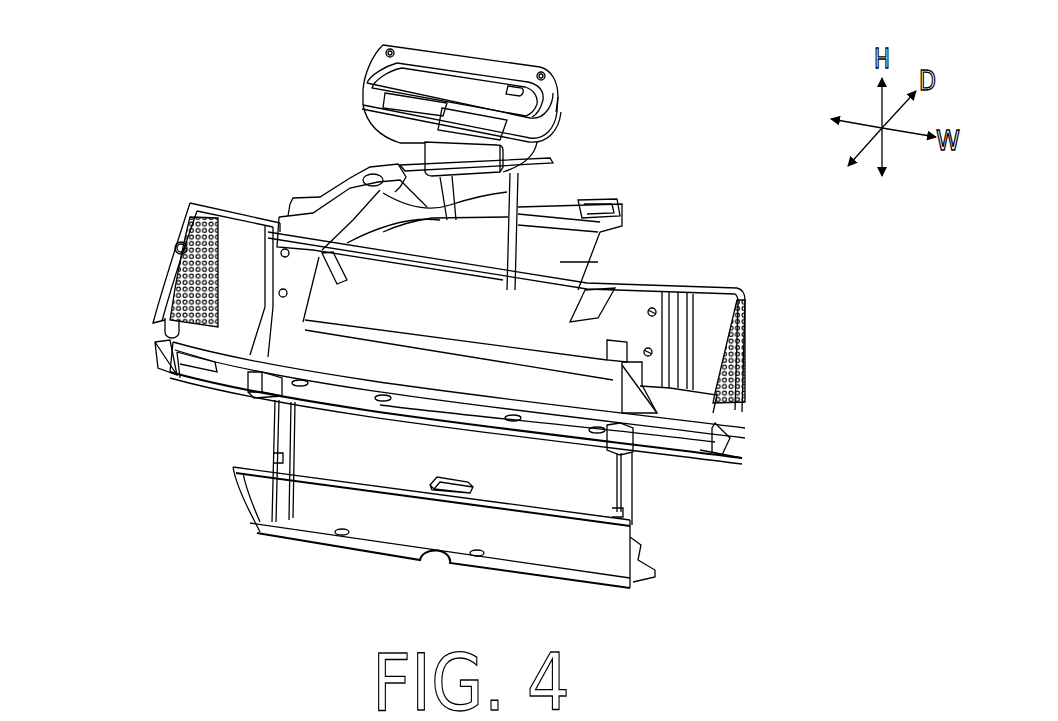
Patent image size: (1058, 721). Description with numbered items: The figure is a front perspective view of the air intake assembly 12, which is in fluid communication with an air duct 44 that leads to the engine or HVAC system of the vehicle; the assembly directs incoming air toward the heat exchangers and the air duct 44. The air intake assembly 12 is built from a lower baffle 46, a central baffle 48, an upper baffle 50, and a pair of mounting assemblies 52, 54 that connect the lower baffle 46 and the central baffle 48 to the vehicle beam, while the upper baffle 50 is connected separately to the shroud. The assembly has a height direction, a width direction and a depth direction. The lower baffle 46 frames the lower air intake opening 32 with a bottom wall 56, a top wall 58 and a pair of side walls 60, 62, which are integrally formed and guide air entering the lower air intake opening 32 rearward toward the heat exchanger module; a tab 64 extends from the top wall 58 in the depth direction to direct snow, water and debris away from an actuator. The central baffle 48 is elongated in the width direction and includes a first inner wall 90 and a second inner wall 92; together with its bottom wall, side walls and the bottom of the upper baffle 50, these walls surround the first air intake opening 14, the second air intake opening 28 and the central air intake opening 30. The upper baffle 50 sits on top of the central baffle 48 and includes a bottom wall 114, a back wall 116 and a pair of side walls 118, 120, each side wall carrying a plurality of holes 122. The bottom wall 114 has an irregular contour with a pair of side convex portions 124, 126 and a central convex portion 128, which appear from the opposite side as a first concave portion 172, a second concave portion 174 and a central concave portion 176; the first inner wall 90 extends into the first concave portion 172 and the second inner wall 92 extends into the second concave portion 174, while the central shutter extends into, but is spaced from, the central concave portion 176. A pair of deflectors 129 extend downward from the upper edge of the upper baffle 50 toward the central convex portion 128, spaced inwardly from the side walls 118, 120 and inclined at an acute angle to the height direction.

The air intake assembly 12 is at (182, 170).
The first air intake opening 14 is at (698, 463).
The second air intake opening 28 is at (178, 378).
The central air intake opening 30 is at (407, 417).
The lower air intake opening 32 is at (420, 528).
The air duct 44 is at (512, 58).
The lower baffle 46 is at (340, 552).
The central baffle 48 is at (730, 445).
The upper baffle 50 is at (713, 283).
The mounting assembly 52 is at (617, 477).
The mounting assembly 54 is at (297, 435).
The bottom wall 56 is at (523, 583).
The top wall 58 is at (500, 510).
The side wall 60 is at (647, 553).
The side wall 62 is at (243, 490).
The tab 64 is at (453, 478).
The first inner wall 90 is at (637, 433).
The second inner wall 92 is at (245, 392).
The bottom wall 114 is at (175, 348).
The back wall 116 is at (242, 250).
The side wall 118 is at (743, 308).
The side wall 120 is at (165, 268).
The holes 122 is at (742, 346).
The side convex portion 124 is at (786, 364).
The side convex portion 126 is at (130, 258).
The central convex portion 128 is at (438, 302).
The deflectors 129 is at (340, 277).
The first concave portion 172 is at (714, 394).
The second concave portion 174 is at (186, 240).
The central concave portion 176 is at (423, 373).